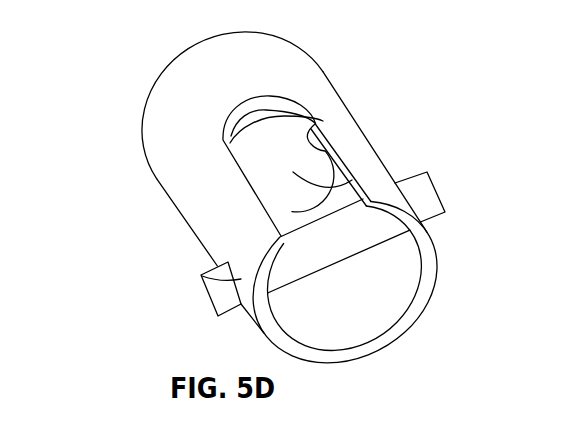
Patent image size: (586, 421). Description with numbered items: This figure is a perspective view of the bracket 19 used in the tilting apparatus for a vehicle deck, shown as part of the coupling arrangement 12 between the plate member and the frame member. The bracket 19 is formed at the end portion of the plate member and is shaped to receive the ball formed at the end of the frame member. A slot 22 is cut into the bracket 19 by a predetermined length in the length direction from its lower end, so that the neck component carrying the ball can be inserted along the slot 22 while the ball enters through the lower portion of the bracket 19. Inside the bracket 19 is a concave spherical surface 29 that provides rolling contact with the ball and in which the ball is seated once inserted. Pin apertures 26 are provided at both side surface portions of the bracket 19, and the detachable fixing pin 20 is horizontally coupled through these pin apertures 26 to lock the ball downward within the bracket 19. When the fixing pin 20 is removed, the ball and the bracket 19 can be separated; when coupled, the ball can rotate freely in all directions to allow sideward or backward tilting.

The cap 12 is at (256, 197).
The bracket 19 is at (163, 133).
The slot 22 is at (315, 123).
The concave spherical surface 29 is at (355, 178).
The pin apertures 26 is at (204, 276).
The fixing pin 20 is at (214, 301).